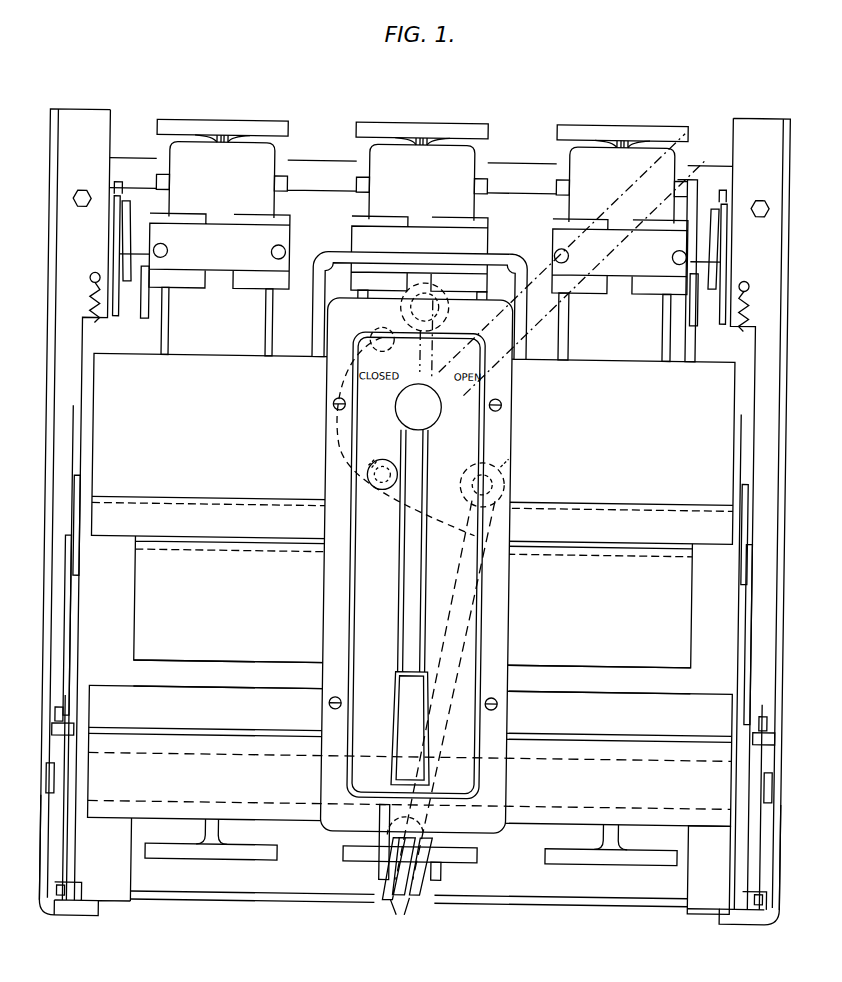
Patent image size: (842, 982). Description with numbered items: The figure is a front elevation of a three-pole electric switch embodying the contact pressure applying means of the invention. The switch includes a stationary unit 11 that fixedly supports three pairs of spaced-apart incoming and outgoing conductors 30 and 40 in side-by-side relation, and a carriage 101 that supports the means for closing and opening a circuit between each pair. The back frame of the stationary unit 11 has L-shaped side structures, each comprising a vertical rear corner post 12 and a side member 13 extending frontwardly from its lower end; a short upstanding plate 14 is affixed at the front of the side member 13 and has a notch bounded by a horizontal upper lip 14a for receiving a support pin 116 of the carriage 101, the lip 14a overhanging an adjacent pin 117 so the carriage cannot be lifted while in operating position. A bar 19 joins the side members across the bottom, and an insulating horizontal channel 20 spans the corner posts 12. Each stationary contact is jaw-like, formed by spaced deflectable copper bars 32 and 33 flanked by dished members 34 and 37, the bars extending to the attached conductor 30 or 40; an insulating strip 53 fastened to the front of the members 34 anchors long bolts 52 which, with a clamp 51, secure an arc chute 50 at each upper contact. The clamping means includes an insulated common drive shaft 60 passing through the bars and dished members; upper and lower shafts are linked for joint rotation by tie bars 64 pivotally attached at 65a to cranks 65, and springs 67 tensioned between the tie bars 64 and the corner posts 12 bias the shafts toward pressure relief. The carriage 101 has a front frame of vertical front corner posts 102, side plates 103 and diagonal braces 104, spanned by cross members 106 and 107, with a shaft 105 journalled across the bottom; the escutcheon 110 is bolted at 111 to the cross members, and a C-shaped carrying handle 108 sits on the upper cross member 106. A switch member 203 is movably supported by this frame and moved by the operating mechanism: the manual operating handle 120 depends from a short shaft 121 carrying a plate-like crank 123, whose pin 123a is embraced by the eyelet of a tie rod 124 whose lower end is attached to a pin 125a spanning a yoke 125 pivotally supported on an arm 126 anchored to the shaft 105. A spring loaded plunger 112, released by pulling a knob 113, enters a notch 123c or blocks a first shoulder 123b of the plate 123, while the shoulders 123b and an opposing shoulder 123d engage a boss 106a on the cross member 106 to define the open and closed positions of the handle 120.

The stationary unit 11 is at (815, 265).
The rear corner post 12 is at (45, 131).
The side member 13 is at (58, 912).
The upstanding plate 14 is at (57, 841).
The horizontal upper lip 14a is at (66, 718).
The bar 19 is at (553, 903).
The horizontal channel 20 is at (512, 162).
The incoming electric current conductor 30 is at (262, 122).
The contact bar 32 is at (275, 140).
The contact bar 33 is at (160, 139).
The dished member 34 is at (285, 185).
The dished member 37 is at (165, 318).
The outgoing electric current conductor 40 is at (212, 862).
The arc chute 50 is at (186, 140).
The clamp 51 is at (348, 236).
The long bolt 52 is at (268, 250).
The insulating strip 53 is at (537, 192).
The drive shaft 60 is at (144, 280).
The tie bar 64 is at (110, 258).
The crank 65 is at (118, 235).
The pivotal attachment 65a is at (118, 192).
The spring 67 is at (88, 301).
The carriage 101 is at (632, 443).
The front corner post 102 is at (74, 583).
The side plate 103 is at (140, 664).
The diagonal brace 104 is at (68, 638).
The shaft 105 is at (193, 757).
The upper cross member 106 is at (735, 400).
The boss 106a is at (402, 330).
The cross member 107 is at (603, 690).
The carrying handle 108 is at (430, 258).
The escutcheon 110 is at (357, 577).
The bolt 111 is at (332, 405).
The spring loaded plunger 112 is at (374, 479).
The knob 113 is at (383, 490).
The support pin 116 is at (50, 771).
The pin 117 is at (55, 734).
The manual operating handle 120 is at (404, 598).
The horizontal shaft 121 is at (435, 420).
The plate-like crank 123 is at (335, 436).
The pin 123a is at (505, 487).
The first shoulder 123b is at (368, 340).
The notch 123c is at (371, 462).
The opposing shoulder 123d is at (500, 454).
The tie rod 124 is at (482, 655).
The yoke 125 is at (404, 908).
The pin 125a is at (446, 872).
The arm 126 is at (384, 870).
The switch member 203 is at (136, 592).